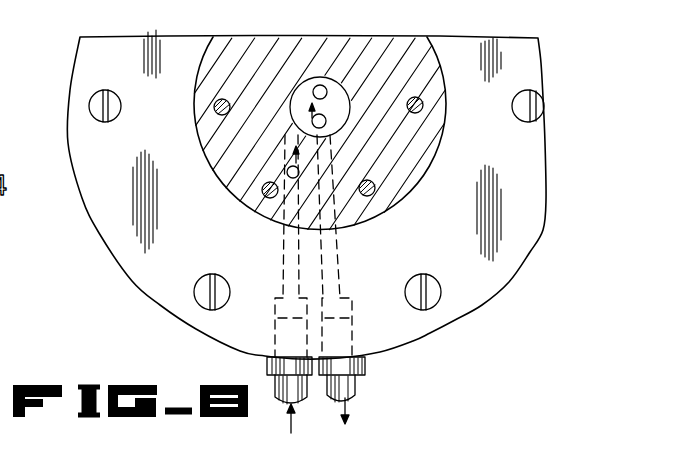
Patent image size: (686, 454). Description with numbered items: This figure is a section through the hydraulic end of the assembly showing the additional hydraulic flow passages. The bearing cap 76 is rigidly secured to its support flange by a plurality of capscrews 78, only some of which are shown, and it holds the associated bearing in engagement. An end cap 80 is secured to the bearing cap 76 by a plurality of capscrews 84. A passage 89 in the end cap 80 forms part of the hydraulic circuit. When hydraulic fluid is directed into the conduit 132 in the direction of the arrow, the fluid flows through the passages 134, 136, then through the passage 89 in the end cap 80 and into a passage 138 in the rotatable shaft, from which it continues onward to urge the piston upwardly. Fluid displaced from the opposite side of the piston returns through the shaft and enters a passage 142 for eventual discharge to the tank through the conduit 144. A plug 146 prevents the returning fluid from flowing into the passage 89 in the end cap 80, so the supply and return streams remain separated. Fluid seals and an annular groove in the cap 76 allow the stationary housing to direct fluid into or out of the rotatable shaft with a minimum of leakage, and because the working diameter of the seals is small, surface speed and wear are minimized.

The second bearing cap 76 is at (112, 231).
The capscrews 78 is at (111, 90).
The end cap 80 is at (208, 70).
The capscrews 84 is at (263, 193).
The passage 89 is at (297, 89).
The conduit 132 is at (272, 383).
The passage 134 is at (283, 242).
The passage 136 is at (287, 172).
The passage 138 is at (326, 91).
The passage 142 is at (340, 243).
The conduit 144 is at (356, 383).
The plug 146 is at (325, 124).